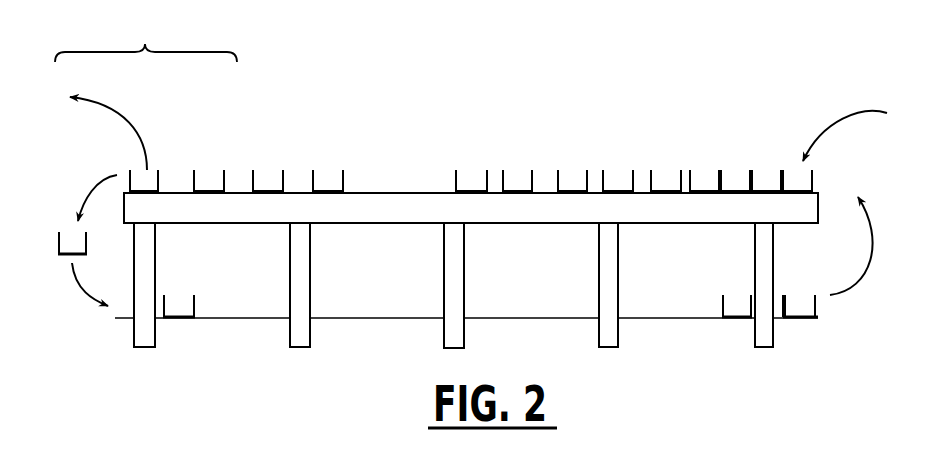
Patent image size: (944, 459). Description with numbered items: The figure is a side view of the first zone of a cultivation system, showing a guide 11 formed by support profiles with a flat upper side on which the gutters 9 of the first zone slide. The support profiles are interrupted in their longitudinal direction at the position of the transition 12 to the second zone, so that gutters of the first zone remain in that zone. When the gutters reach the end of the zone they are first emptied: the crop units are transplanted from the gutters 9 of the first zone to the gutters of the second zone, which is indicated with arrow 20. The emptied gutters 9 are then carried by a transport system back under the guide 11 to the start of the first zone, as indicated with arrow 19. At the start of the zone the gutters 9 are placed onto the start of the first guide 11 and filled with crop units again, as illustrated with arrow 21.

The gutters of the first zone 9 is at (58, 242).
The guide 11 is at (720, 213).
The transition 12 is at (146, 37).
The arrow 19 is at (82, 292).
The arrow 20 is at (135, 120).
The arrow 21 is at (842, 107).